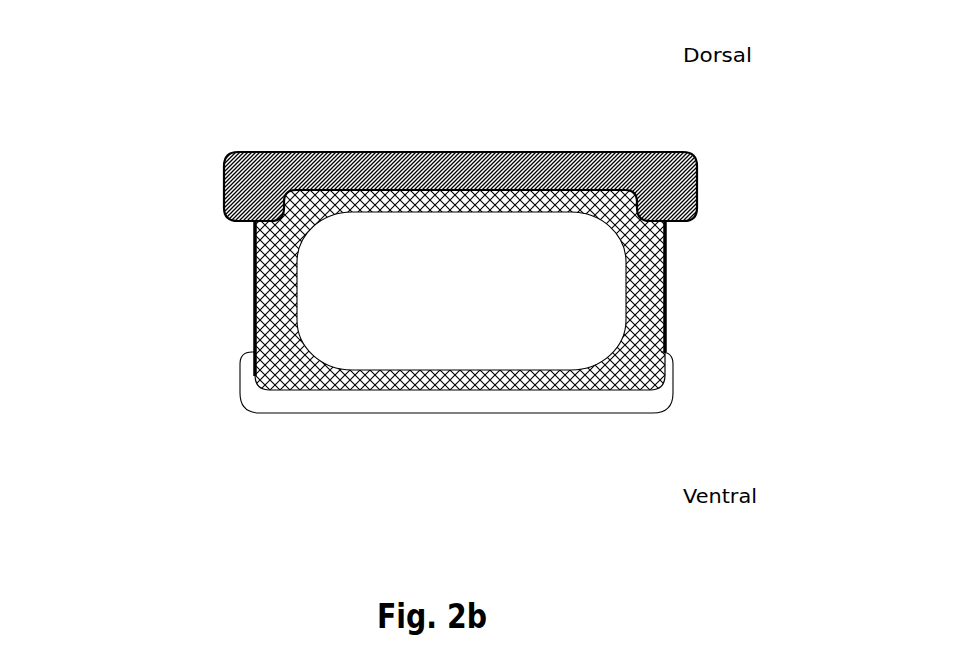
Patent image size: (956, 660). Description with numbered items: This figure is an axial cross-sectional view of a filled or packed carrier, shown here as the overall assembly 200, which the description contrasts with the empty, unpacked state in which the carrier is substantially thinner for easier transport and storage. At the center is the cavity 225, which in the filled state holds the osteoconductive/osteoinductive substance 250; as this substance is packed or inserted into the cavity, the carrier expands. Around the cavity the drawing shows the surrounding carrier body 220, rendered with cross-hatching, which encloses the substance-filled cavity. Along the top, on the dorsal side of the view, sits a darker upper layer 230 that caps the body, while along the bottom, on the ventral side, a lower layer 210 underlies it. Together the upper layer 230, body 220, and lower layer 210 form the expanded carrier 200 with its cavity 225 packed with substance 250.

The probe assembly 200 is at (211, 98).
The ventral bottom layer 210 is at (663, 403).
The body / encapsulation 220 is at (663, 278).
The cavity 225 is at (445, 242).
The dorsal top layer 230 is at (223, 189).
The osteoconductive/osteoinductive substance 250 is at (465, 330).